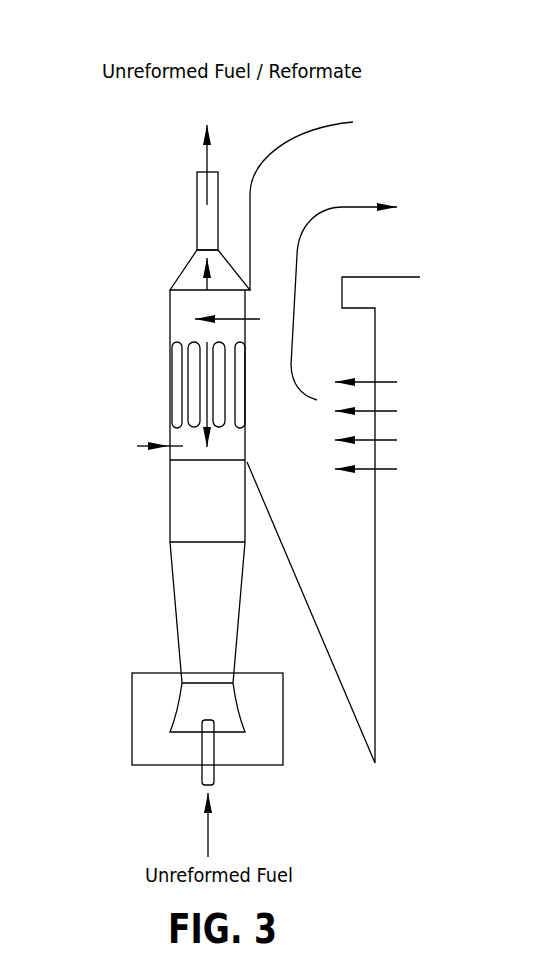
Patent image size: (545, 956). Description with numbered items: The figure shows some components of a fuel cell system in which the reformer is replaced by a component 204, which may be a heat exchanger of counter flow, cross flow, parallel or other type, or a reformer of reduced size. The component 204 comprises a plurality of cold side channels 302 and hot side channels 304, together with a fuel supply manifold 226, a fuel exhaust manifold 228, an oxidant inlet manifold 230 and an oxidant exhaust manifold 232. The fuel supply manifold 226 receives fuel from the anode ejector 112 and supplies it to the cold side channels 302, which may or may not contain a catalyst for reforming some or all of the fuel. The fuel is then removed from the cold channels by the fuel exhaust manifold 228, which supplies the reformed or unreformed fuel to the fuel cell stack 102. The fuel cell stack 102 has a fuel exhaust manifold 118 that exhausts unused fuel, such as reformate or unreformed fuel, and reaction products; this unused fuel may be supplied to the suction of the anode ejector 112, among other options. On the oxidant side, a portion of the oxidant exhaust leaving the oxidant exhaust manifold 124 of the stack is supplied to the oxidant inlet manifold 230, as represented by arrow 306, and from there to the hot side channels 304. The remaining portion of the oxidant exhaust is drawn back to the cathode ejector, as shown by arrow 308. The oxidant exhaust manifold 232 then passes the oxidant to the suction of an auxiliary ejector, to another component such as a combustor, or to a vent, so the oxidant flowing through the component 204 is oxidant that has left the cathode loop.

The fuel cell stack 102 is at (497, 421).
The anode ejector 112 is at (123, 610).
The fuel exhaust manifold 118 is at (152, 686).
The oxidant exhaust manifold 124 is at (395, 443).
The component 204 is at (151, 416).
The fuel supply manifold 226 is at (224, 529).
The fuel exhaust manifold 228 is at (190, 280).
The oxidant inlet manifold 230 is at (212, 308).
The oxidant exhaust manifold 232 is at (197, 445).
The cold side channels 302 is at (220, 378).
The hot side channels 304 is at (183, 370).
The arrow 306 is at (267, 320).
The arrow 308 is at (344, 205).